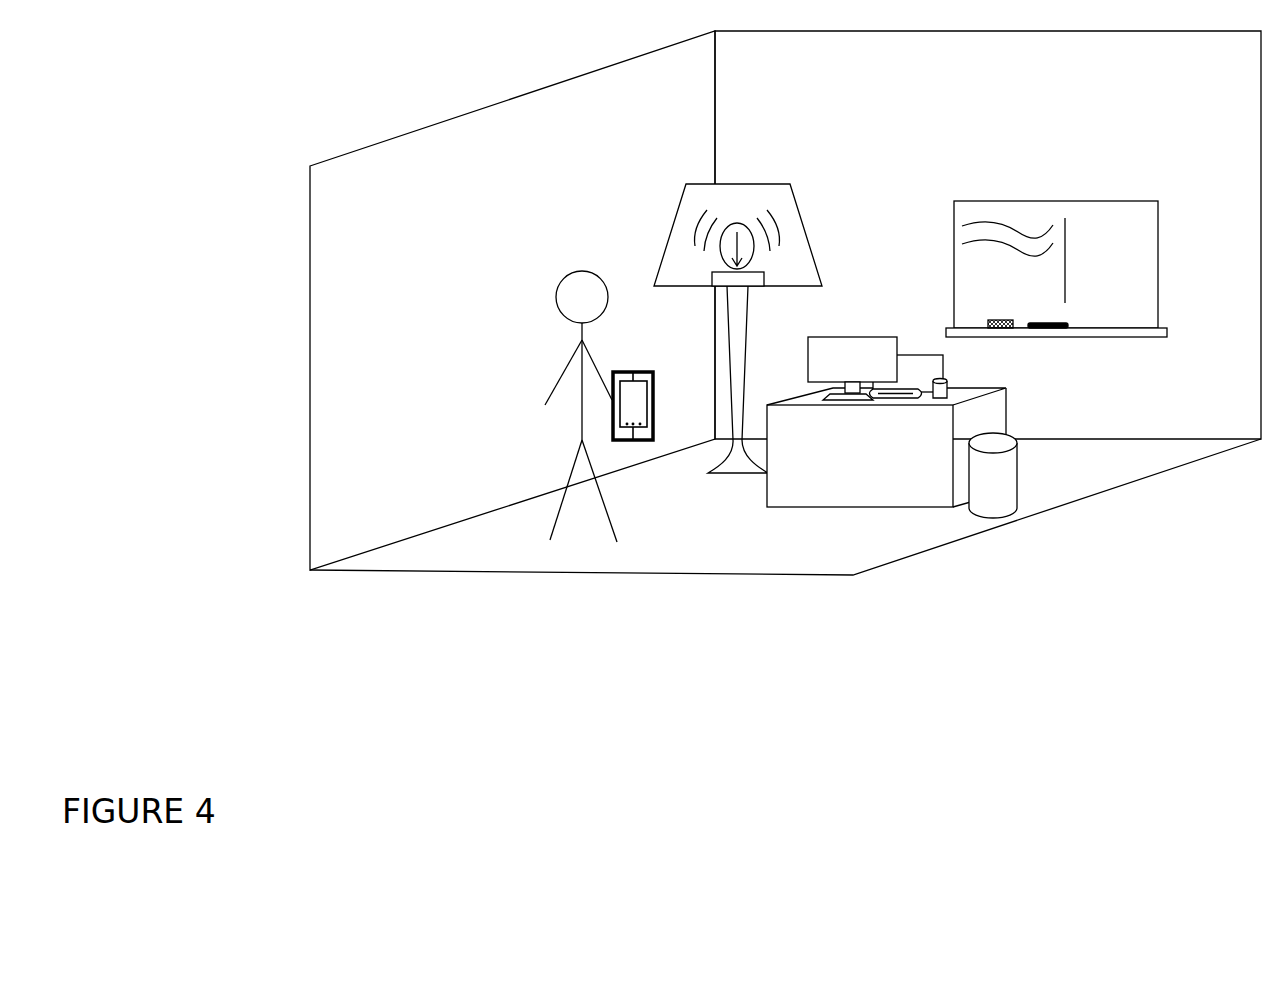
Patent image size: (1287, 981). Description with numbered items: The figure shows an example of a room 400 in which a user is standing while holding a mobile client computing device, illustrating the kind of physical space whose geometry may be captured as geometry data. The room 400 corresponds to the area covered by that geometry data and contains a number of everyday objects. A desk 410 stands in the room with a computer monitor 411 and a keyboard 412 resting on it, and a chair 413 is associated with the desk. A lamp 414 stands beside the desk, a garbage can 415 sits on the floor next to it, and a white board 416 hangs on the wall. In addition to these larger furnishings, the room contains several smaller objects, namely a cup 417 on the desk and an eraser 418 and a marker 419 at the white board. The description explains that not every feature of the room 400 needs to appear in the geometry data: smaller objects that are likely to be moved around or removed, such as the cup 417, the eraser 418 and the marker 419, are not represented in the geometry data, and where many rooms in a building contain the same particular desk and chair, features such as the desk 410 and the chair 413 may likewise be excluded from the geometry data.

The room 400 is at (691, 403).
The desk 410 is at (767, 507).
The computer monitor 411 is at (880, 337).
The keyboard 412 is at (897, 389).
The chair 413 is at (943, 374).
The lamp 414 is at (676, 222).
The garbage can 415 is at (1017, 478).
The white board 416 is at (1158, 270).
The cup 417 is at (947, 397).
The eraser 418 is at (996, 320).
The marker 419 is at (1068, 328).